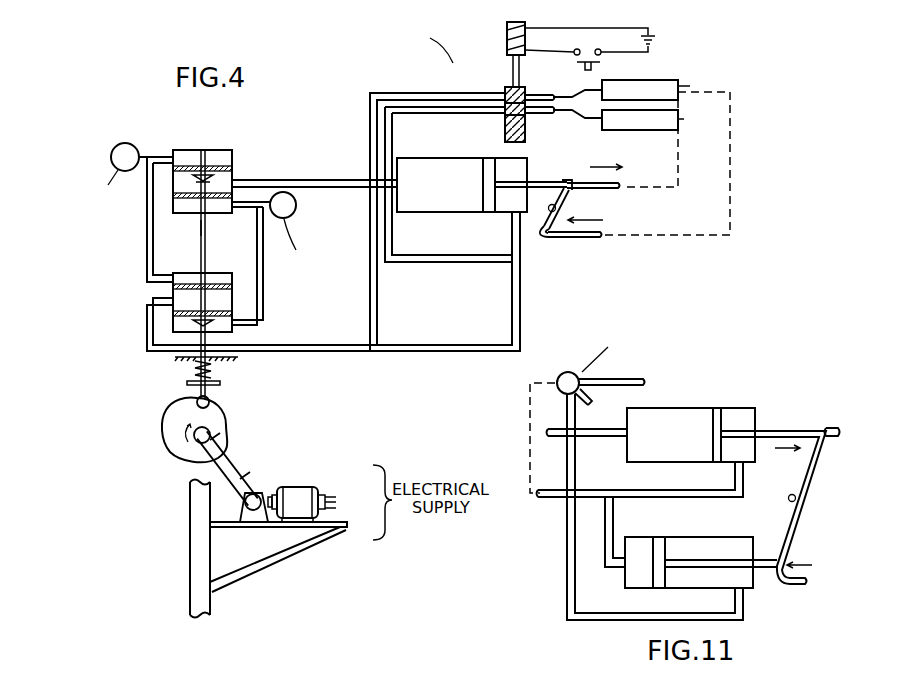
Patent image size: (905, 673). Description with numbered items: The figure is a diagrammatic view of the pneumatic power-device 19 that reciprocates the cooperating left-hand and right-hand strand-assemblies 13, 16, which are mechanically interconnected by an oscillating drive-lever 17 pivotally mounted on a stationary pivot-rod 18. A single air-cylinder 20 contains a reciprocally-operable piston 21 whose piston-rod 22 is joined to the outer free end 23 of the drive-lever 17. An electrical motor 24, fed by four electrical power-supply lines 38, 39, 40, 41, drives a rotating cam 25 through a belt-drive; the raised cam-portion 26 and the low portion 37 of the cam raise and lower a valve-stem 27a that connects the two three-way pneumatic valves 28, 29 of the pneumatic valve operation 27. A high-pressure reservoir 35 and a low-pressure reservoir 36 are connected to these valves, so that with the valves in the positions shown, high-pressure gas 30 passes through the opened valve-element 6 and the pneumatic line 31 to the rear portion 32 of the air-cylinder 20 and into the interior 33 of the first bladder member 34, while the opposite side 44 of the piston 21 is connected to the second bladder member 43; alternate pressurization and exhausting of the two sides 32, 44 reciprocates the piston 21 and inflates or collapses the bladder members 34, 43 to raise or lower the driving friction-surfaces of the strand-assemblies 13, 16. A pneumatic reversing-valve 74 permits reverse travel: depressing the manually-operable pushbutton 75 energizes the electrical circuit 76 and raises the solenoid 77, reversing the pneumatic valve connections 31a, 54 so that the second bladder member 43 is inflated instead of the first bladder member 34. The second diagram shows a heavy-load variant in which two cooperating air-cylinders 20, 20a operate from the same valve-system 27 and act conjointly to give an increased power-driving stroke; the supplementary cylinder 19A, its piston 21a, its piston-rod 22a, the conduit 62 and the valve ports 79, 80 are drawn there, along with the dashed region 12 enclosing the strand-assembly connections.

In FIG. 4, the valve-element 6 is at (215, 178).
In FIG. 4, the work station 12 is at (648, 218).
In FIG. 4, the left-hand strand-assembly 13 is at (620, 182).
In FIG. 11, the left-hand strand-assembly 13 is at (829, 427).
In FIG. 4, the right-hand strand-assembly 16 is at (580, 239).
In FIG. 11, the right-hand strand-assembly 16 is at (805, 590).
In FIG. 4, the drive-lever 17 is at (531, 239).
In FIG. 11, the drive-lever 17 is at (797, 472).
In FIG. 4, the pivot-rod 18 is at (556, 208).
In FIG. 11, the pivot-rod 18 is at (788, 502).
In FIG. 4, the pneumatic power-device 19 is at (482, 184).
In FIG. 11, the fluid cylinder 19A is at (719, 433).
In FIG. 4, the air-cylinder 20 is at (430, 213).
In FIG. 11, the air-cylinder 20 is at (672, 408).
In FIG. 11, the second air-cylinder 20a is at (630, 590).
In FIG. 4, the piston 21 is at (482, 206).
In FIG. 11, the piston 21 is at (712, 433).
In FIG. 11, the second piston 21a is at (672, 553).
In FIG. 4, the piston-rod 22 is at (510, 183).
In FIG. 11, the piston-rod 22 is at (758, 431).
In FIG. 11, the second piston rod 22a is at (760, 574).
In FIG. 4, the outer free end of drive-lever 23 is at (566, 177).
In FIG. 4, the electrical motor 24 is at (292, 487).
In FIG. 4, the rotating cam 25 is at (172, 446).
In FIG. 4, the raised cam-portion 26 is at (165, 410).
In FIG. 4, the pneumatic valve operation 27 is at (184, 258).
In FIG. 4, the valve-stem 27a is at (200, 228).
In FIG. 4, the first three-way pneumatic valve 28 is at (212, 150).
In FIG. 4, the second three-way pneumatic valve 29 is at (212, 273).
In FIG. 4, the high-pressure gas 30 is at (112, 158).
In FIG. 4, the pneumatic line 31 is at (290, 180).
In FIG. 11, the pneumatic line 31 is at (585, 430).
In FIG. 4, the pneumatic valve connection 31a is at (410, 93).
In FIG. 11, the pneumatic valve connection 31a is at (563, 410).
In FIG. 4, the rear portion of air-cylinder 32 is at (460, 198).
In FIG. 4, the interior of first bladder chamber 33 is at (656, 80).
In FIG. 4, the first bladder member 34 is at (679, 86).
In FIG. 4, the high-pressure reservoir 35 is at (123, 144).
In FIG. 4, the low-pressure reservoir 36 is at (292, 214).
In FIG. 4, the low cam-portion 37 is at (228, 438).
In FIG. 4, the electrical power-supply line 38 is at (327, 496).
In FIG. 4, the electrical power-supply line 39 is at (336, 501).
In FIG. 4, the electrical power-supply line 40 is at (336, 508).
In FIG. 4, the electrical power-supply line 41 is at (325, 527).
In FIG. 4, the second bladder member 43 is at (679, 119).
In FIG. 4, the rear portion of piston 44 is at (512, 206).
In FIG. 4, the pneumatic valve connection 54 is at (435, 115).
In FIG. 11, the pneumatic valve connection 54 is at (527, 414).
In FIG. 4, the conduit 62 is at (365, 349).
In FIG. 11, the conduit 62 is at (552, 500).
In FIG. 4, the pneumatic reversing-valve 74 is at (505, 87).
In FIG. 4, the manually-operable pushbutton 75 is at (600, 66).
In FIG. 4, the electrical circuit 76 is at (573, 29).
In FIG. 4, the solenoid 77 is at (507, 40).
In FIG. 11, the solenoid 77 is at (562, 374).
In FIG. 4, the valve port 79 is at (538, 94).
In FIG. 11, the valve port 79 is at (612, 381).
In FIG. 4, the valve port 80 is at (530, 114).
In FIG. 11, the valve port 80 is at (593, 399).